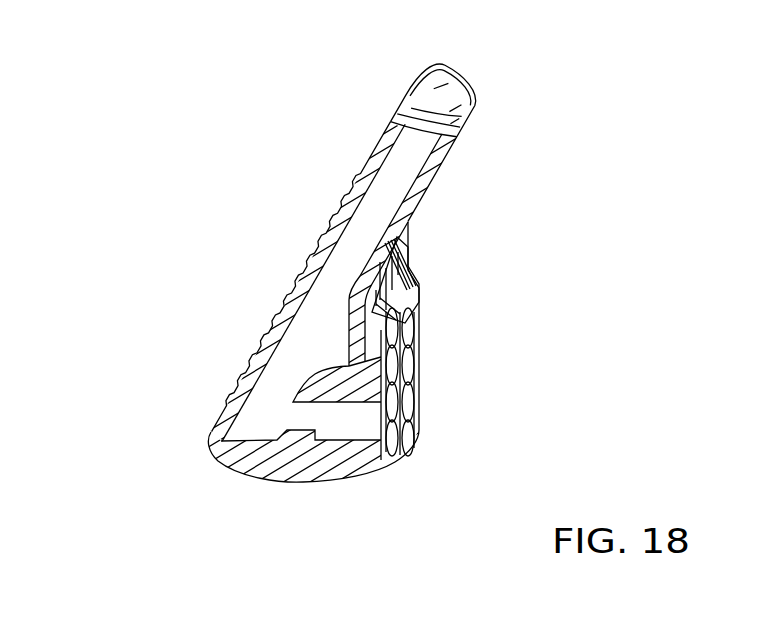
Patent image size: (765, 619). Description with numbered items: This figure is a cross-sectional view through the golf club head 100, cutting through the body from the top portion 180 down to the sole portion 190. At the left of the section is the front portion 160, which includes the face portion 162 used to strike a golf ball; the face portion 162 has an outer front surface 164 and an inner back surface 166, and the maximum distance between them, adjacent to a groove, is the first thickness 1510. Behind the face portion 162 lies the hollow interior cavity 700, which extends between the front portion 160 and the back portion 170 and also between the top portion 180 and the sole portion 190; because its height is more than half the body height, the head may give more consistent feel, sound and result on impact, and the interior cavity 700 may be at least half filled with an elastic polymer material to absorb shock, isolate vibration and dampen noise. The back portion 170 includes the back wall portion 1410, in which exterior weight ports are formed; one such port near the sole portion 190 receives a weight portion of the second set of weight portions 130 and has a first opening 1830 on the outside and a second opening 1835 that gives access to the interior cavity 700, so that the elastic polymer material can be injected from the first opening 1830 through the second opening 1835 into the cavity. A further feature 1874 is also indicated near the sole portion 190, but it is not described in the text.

The golf club head 100 is at (283, 309).
The top portion 180 is at (405, 81).
The face portion 162 is at (311, 309).
The back wall portion 1410 is at (427, 180).
The interior cavity 700 is at (348, 230).
The front portion 160 is at (293, 309).
The back portion 170 is at (427, 340).
The first thickness 1510 is at (306, 307).
The second opening 1835 is at (325, 413).
The second set of weight portions 130 is at (434, 363).
The front surface 164 is at (311, 309).
The back surface 166 is at (220, 408).
The first opening 1830 is at (382, 394).
The sole portion 190 is at (297, 309).
The passage 1874 is at (330, 432).